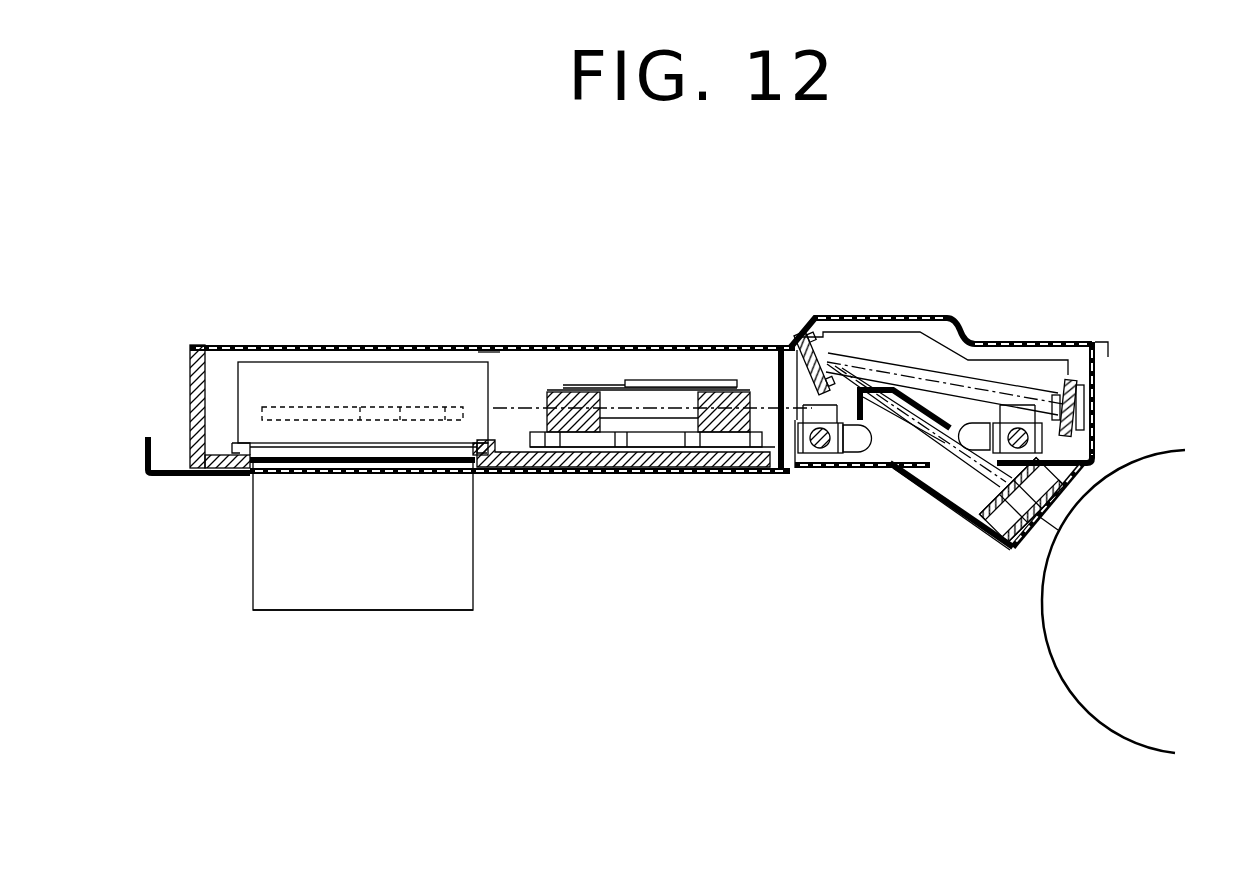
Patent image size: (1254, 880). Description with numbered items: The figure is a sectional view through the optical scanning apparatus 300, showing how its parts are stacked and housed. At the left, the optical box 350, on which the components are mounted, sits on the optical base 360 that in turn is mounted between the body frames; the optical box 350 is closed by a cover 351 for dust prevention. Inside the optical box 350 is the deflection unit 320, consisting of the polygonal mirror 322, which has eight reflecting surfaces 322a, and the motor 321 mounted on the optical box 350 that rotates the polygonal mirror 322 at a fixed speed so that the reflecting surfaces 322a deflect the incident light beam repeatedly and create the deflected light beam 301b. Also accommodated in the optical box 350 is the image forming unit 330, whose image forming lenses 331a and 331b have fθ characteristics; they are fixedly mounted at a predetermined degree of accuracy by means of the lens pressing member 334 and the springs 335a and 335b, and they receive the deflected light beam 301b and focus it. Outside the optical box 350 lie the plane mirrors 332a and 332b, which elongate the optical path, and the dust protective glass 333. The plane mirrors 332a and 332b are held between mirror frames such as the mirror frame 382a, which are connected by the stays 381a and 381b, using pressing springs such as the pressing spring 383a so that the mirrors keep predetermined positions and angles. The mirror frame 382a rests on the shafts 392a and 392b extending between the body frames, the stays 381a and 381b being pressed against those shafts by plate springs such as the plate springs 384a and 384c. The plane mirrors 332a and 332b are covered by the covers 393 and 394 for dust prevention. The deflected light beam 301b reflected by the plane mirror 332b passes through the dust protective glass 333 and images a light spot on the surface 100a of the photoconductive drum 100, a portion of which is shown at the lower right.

The photoconductive drum 100 is at (1105, 690).
The surface of the photoconductive drum 100a is at (1050, 648).
The optical scanning apparatus 300 is at (486, 344).
The deflected light beam 301b is at (508, 405).
The deflection unit 320 is at (378, 614).
The motor 321 is at (476, 566).
The polygonal mirror 322 is at (385, 402).
The reflecting surfaces 322a is at (450, 405).
The image forming unit 330 is at (680, 470).
The image forming lens 331a is at (558, 390).
The image forming lens 331b is at (742, 392).
The plane mirror 332a is at (1070, 380).
The plane mirror 332b is at (800, 332).
The dust protective glass 333 is at (1000, 540).
The lens pressing member 334 is at (680, 380).
The spring 335a is at (596, 385).
The spring 335b is at (535, 440).
The optical box 350 is at (190, 398).
The cover 351 is at (245, 346).
The optical base 360 is at (197, 476).
The stay 381a is at (993, 420).
The stay 381b is at (848, 468).
The mirror frame 382a is at (938, 318).
The pressing spring 383a is at (1080, 408).
The plate spring 384a is at (975, 425).
The plate spring 384c is at (875, 468).
The shaft 392a is at (1096, 447).
The shaft 392b is at (820, 468).
The cover 393 is at (963, 517).
The cover 394 is at (881, 316).